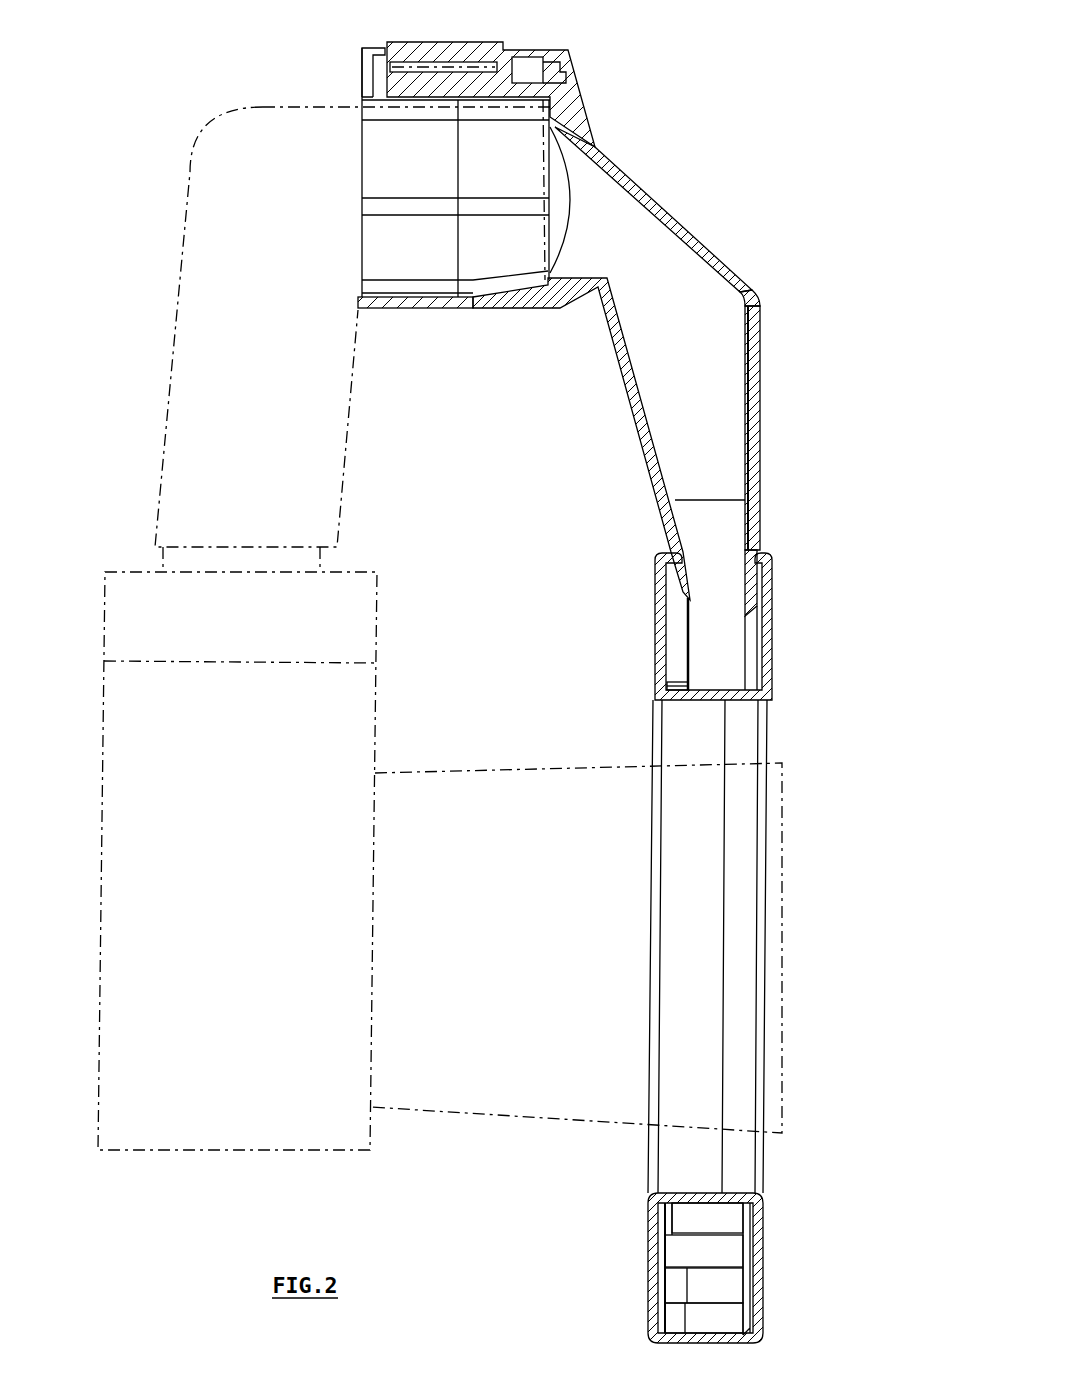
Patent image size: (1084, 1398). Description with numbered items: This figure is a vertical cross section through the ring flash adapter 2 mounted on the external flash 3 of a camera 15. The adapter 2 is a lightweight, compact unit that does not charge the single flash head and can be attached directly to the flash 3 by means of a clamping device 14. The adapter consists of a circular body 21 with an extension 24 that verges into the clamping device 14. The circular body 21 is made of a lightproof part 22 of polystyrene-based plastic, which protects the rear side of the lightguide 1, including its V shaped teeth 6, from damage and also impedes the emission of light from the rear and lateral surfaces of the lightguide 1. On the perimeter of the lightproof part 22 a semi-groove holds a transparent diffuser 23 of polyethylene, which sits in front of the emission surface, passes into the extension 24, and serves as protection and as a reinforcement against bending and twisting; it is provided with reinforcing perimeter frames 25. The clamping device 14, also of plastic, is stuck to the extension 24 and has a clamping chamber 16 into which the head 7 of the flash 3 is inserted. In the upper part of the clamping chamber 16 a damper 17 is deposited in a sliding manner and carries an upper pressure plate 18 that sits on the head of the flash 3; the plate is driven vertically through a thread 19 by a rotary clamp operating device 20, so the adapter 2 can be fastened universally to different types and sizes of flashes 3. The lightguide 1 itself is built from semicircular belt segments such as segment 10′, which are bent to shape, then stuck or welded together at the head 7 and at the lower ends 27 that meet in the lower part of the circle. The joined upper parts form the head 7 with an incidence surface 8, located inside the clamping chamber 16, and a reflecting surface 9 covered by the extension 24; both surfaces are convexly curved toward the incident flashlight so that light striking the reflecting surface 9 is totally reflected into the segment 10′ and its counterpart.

The lightguide 1 is at (720, 637).
The ring flash adapter 2 is at (794, 672).
The external flash 3 is at (238, 158).
The V shaped teeth 6 is at (667, 1223).
The head 7 is at (718, 372).
The incidence surface 8 is at (567, 215).
The reflecting surface 9 is at (713, 265).
The semicircular belt segment 10′ is at (718, 538).
The clamping device 14 is at (609, 77).
The camera 15 is at (153, 1122).
The clamping chamber 16 is at (420, 257).
The damper 17 is at (372, 95).
The upper pressure plate 18 is at (372, 47).
The thread 19 is at (460, 62).
The rotary clamp operating device 20 is at (500, 42).
The circular body 21 is at (765, 1162).
The lightproof part 22 is at (655, 643).
The transparent diffuser 23 is at (768, 647).
The extension 24 is at (743, 280).
The reinforcing perimeter frame 25 is at (768, 740).
The lower ends 27 is at (725, 1254).